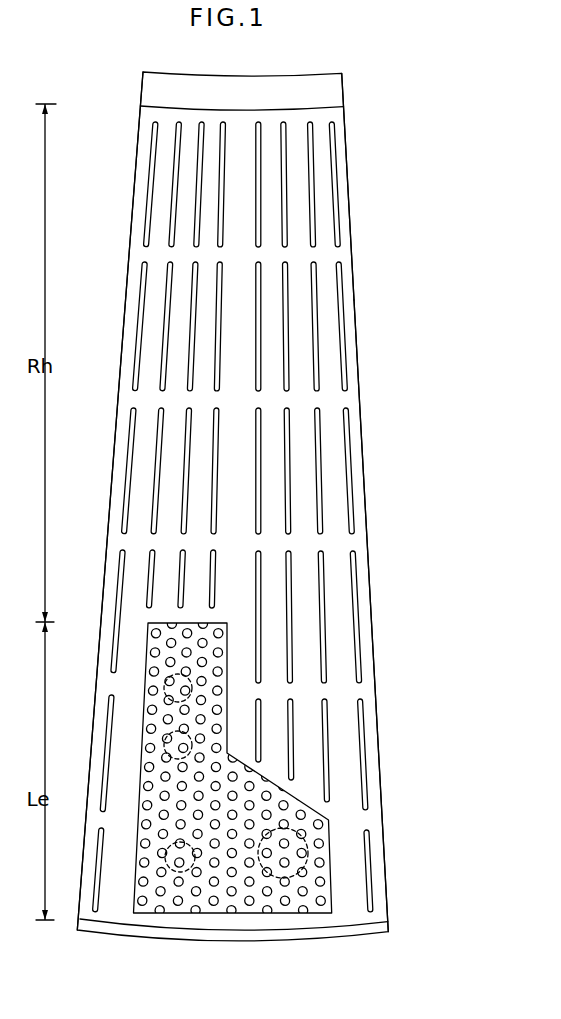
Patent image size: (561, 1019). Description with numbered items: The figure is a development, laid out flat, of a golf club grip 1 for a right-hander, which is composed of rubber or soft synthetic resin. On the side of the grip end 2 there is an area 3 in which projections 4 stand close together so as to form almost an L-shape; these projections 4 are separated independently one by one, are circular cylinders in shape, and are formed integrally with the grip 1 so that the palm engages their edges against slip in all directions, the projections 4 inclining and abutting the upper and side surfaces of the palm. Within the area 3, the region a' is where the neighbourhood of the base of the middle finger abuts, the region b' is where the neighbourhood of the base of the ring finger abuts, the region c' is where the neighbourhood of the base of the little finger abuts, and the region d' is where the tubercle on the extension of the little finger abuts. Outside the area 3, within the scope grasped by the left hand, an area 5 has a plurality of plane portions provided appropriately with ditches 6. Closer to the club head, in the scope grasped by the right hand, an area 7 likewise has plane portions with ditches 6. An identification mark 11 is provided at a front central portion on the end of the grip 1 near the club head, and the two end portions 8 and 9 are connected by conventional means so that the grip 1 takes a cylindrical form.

The grip 1 is at (352, 242).
The grip end 2 is at (253, 941).
The area 3 is at (163, 917).
The projections 4 is at (233, 903).
The area 5 is at (348, 690).
The ditches 6 is at (343, 368).
The area 7 is at (362, 418).
The end portion 8 is at (346, 158).
The end portion 9 is at (131, 223).
The identification mark 11 is at (300, 92).
The region a' is at (128, 684).
The region b' is at (128, 741).
The region c' is at (125, 857).
The region d' is at (338, 859).